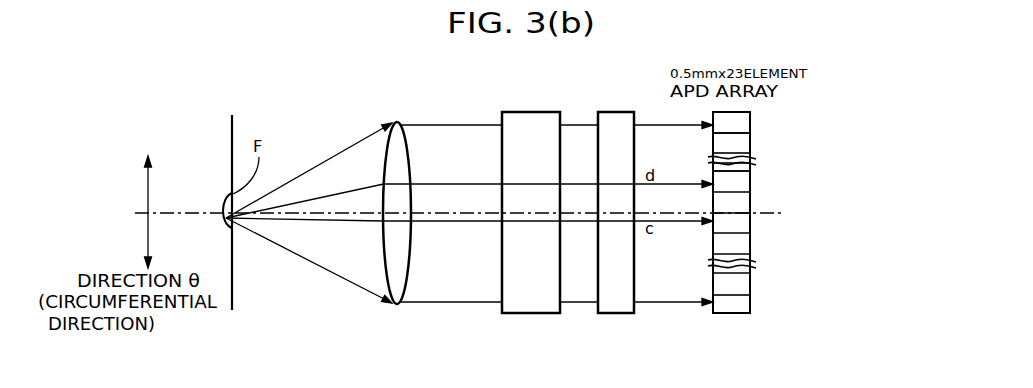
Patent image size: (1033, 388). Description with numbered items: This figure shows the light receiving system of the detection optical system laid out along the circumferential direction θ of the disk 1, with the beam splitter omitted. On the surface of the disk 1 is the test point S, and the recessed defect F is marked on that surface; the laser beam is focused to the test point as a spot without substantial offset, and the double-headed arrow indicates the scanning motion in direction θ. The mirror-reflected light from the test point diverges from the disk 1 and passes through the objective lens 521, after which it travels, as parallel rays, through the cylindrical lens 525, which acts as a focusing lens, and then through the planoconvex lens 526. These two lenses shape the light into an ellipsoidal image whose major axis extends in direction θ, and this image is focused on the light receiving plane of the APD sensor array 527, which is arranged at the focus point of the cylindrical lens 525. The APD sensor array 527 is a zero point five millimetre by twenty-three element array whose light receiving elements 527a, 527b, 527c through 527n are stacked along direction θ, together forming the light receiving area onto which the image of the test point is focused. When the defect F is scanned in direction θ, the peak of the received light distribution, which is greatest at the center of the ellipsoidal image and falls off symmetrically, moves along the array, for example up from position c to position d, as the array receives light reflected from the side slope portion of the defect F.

The disk 1 is at (232, 300).
The objective lens 521 is at (396, 122).
The cylindrical lens (focusing lens) 525 is at (530, 112).
The planoconvex lens 526 is at (616, 112).
The APD sensor array 527 is at (769, 209).
The light receiving element 527a is at (745, 123).
The light receiving element 527b is at (741, 143).
The light receiving element 527c is at (749, 160).
The light receiving element 527n is at (745, 305).